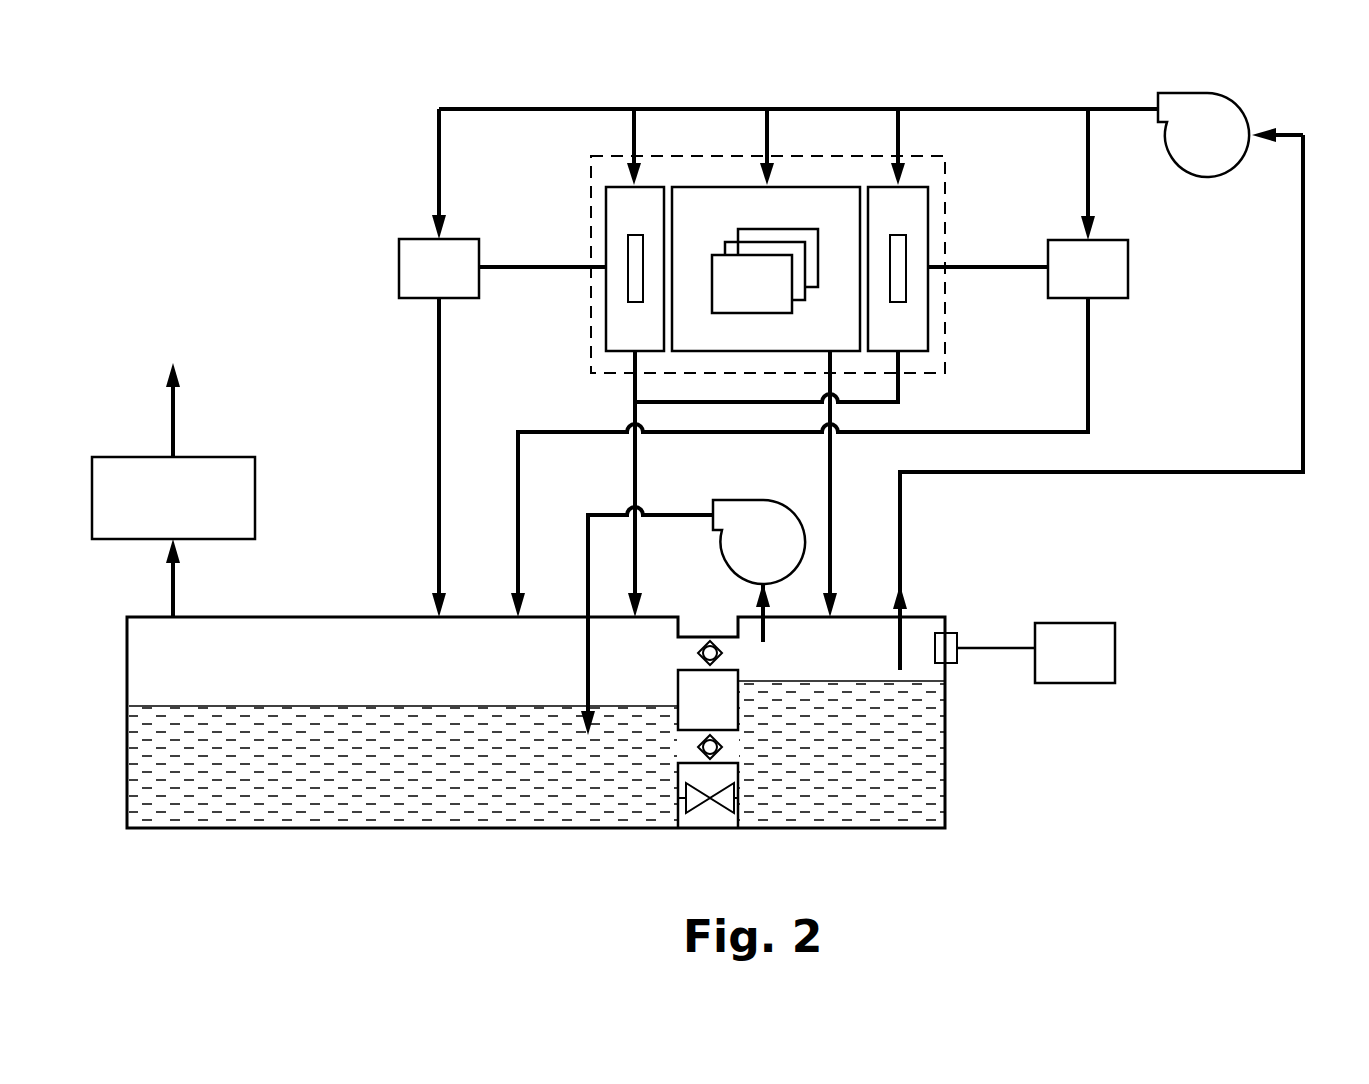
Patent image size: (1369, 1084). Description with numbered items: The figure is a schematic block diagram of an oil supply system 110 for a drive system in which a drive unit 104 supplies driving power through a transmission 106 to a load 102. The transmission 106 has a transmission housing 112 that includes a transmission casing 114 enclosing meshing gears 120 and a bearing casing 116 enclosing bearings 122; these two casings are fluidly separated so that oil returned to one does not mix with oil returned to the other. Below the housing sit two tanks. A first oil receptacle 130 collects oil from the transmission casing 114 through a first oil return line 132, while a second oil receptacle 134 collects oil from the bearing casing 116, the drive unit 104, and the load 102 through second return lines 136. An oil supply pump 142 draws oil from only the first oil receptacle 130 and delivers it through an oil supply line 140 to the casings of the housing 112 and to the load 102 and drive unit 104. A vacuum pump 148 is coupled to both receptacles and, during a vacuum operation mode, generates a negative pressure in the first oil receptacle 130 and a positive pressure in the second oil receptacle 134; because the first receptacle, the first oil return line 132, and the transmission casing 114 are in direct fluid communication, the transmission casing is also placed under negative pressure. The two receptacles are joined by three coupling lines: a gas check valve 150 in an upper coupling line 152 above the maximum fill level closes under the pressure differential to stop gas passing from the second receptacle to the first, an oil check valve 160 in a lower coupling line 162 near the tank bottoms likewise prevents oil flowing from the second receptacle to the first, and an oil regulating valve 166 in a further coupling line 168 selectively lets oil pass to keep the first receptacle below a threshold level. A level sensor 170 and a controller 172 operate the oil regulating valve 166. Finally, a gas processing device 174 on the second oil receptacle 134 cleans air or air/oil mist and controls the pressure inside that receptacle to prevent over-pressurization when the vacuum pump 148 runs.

The load 102 is at (1111, 281).
The drive unit 104 is at (462, 281).
The transmission 106 is at (942, 200).
The oil supply system 110 is at (118, 322).
The transmission housing 112 is at (800, 156).
The transmission casing 114 is at (742, 185).
The bearing casing 116 is at (621, 185).
The meshing gears 120 is at (776, 296).
The bearings 122 is at (628, 250).
The first oil receptacle 130 is at (840, 830).
The first oil return line 132 is at (830, 492).
The second oil receptacle 134 is at (441, 830).
The second return line 136 is at (439, 455).
The oil supply line 140 is at (1120, 109).
The oil supply pump 142 is at (1255, 104).
The vacuum pump 148 is at (750, 520).
The gas check valve 150 is at (372, 261).
The coupling line 152 is at (708, 672).
The oil check valve 160 is at (698, 745).
The coupling line 162 is at (693, 765).
The oil regulating valve 166 is at (700, 810).
The coupling line 168 is at (733, 803).
The level sensor 170 is at (958, 640).
The controller 172 is at (1098, 667).
The gas processing device 174 is at (196, 510).